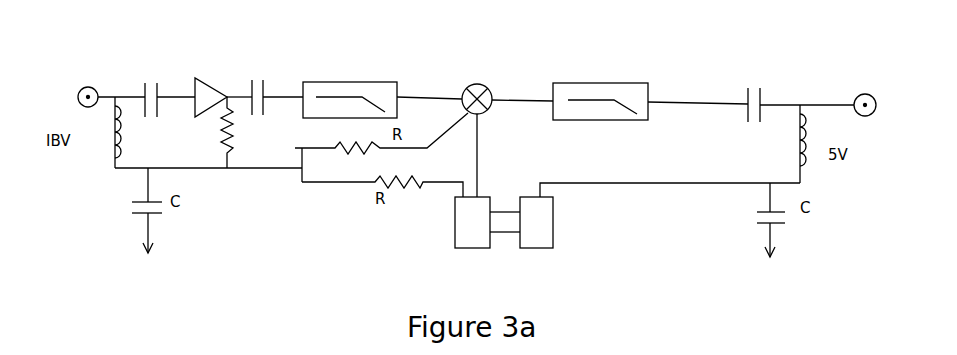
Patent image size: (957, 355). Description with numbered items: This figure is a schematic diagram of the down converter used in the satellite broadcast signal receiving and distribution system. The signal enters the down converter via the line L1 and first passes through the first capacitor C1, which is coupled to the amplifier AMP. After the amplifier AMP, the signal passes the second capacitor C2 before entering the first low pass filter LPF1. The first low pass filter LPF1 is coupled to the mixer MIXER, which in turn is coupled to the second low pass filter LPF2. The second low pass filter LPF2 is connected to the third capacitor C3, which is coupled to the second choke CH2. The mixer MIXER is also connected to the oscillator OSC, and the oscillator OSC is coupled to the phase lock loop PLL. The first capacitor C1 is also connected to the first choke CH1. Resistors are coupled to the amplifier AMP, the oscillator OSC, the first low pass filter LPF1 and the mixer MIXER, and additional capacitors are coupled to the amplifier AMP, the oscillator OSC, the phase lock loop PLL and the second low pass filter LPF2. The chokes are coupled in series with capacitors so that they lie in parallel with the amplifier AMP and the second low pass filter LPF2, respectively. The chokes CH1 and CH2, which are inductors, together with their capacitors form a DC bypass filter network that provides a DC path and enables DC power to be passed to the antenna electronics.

The line L1 is at (122, 90).
The first capacitor C1 is at (148, 88).
The second capacitor C2 is at (265, 78).
The third capacitor C3 is at (746, 90).
The first choke CH1 is at (152, 141).
The second choke CH2 is at (778, 144).
The amplifier AMP is at (219, 90).
The first low pass filter LPF1 is at (350, 87).
The second low pass filter LPF2 is at (600, 89).
The mixer MIXER is at (471, 87).
The oscillator OSC is at (447, 222).
The phase lock loop PLL is at (558, 222).